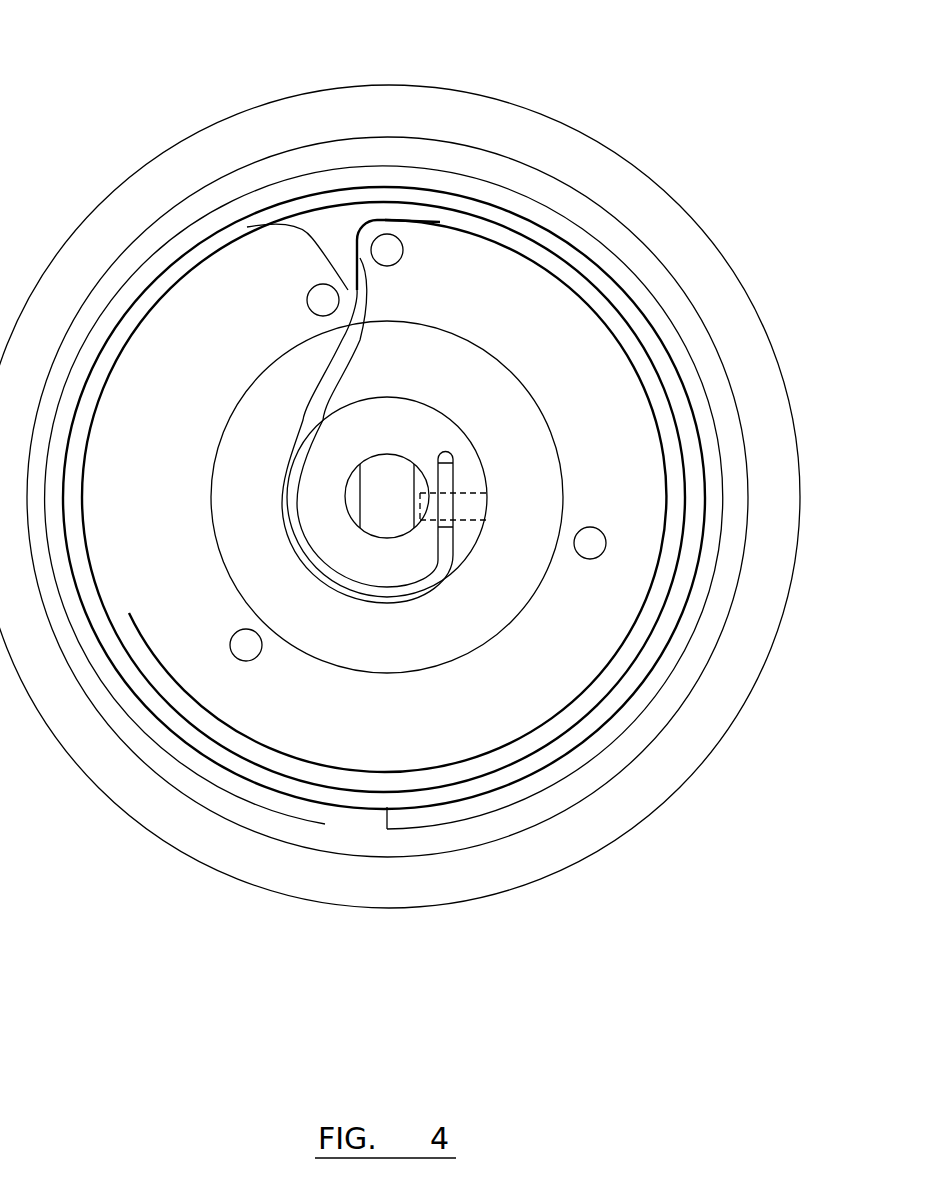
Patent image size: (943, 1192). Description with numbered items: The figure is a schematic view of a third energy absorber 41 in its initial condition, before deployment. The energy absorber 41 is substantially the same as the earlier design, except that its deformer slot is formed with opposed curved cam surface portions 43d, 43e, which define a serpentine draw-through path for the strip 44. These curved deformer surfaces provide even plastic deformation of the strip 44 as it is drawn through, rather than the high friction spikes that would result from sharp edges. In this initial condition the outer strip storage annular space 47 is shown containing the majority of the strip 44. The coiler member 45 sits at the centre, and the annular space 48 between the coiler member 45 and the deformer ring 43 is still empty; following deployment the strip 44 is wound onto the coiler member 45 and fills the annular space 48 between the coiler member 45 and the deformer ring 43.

The energy absorber 41 is at (580, 118).
The deformer ring 43 is at (158, 513).
The curved cam surface portion 43d is at (390, 294).
The curved cam surface portion 43e is at (346, 286).
The strip 44 is at (615, 262).
The coiler member 45 is at (420, 432).
The outer strip storage annular space 47 is at (325, 826).
The annular space 48 is at (405, 643).